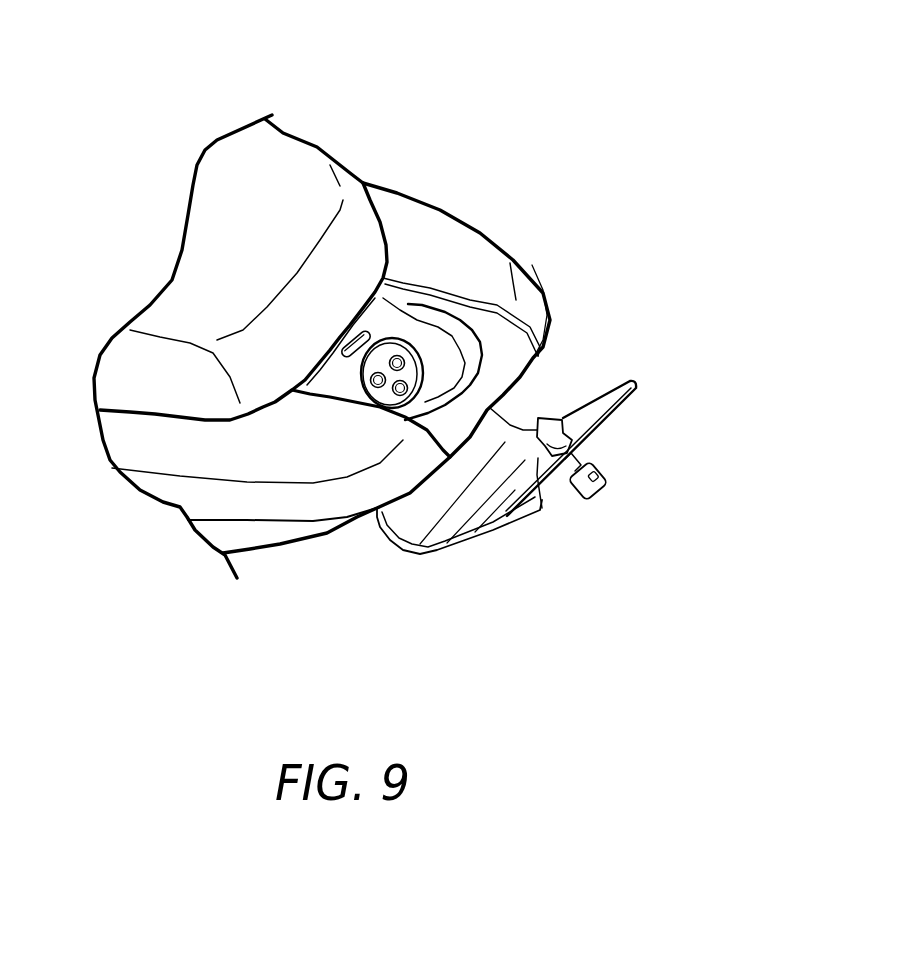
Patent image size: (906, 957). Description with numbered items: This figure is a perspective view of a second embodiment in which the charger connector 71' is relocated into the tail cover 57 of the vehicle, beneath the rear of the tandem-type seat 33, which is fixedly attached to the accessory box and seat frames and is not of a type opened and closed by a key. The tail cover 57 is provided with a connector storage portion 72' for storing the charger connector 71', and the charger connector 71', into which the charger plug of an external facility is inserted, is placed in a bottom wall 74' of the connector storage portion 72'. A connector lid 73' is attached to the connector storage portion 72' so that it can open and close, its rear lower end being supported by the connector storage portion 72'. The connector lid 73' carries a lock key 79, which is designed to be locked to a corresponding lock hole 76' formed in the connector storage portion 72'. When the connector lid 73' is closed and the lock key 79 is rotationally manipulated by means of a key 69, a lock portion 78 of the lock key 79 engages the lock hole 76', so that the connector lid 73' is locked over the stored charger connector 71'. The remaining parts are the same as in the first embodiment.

The seat 33 is at (273, 170).
The tail cover 57 is at (467, 257).
The charger connector 71' is at (501, 317).
The connector storage portion 72' is at (371, 478).
The connector lid 73' is at (459, 533).
The bottom wall 74' is at (461, 237).
The lock hole 76' is at (388, 222).
The lock portion 78 is at (540, 503).
The lock key 79 is at (548, 428).
The key 69 is at (597, 472).